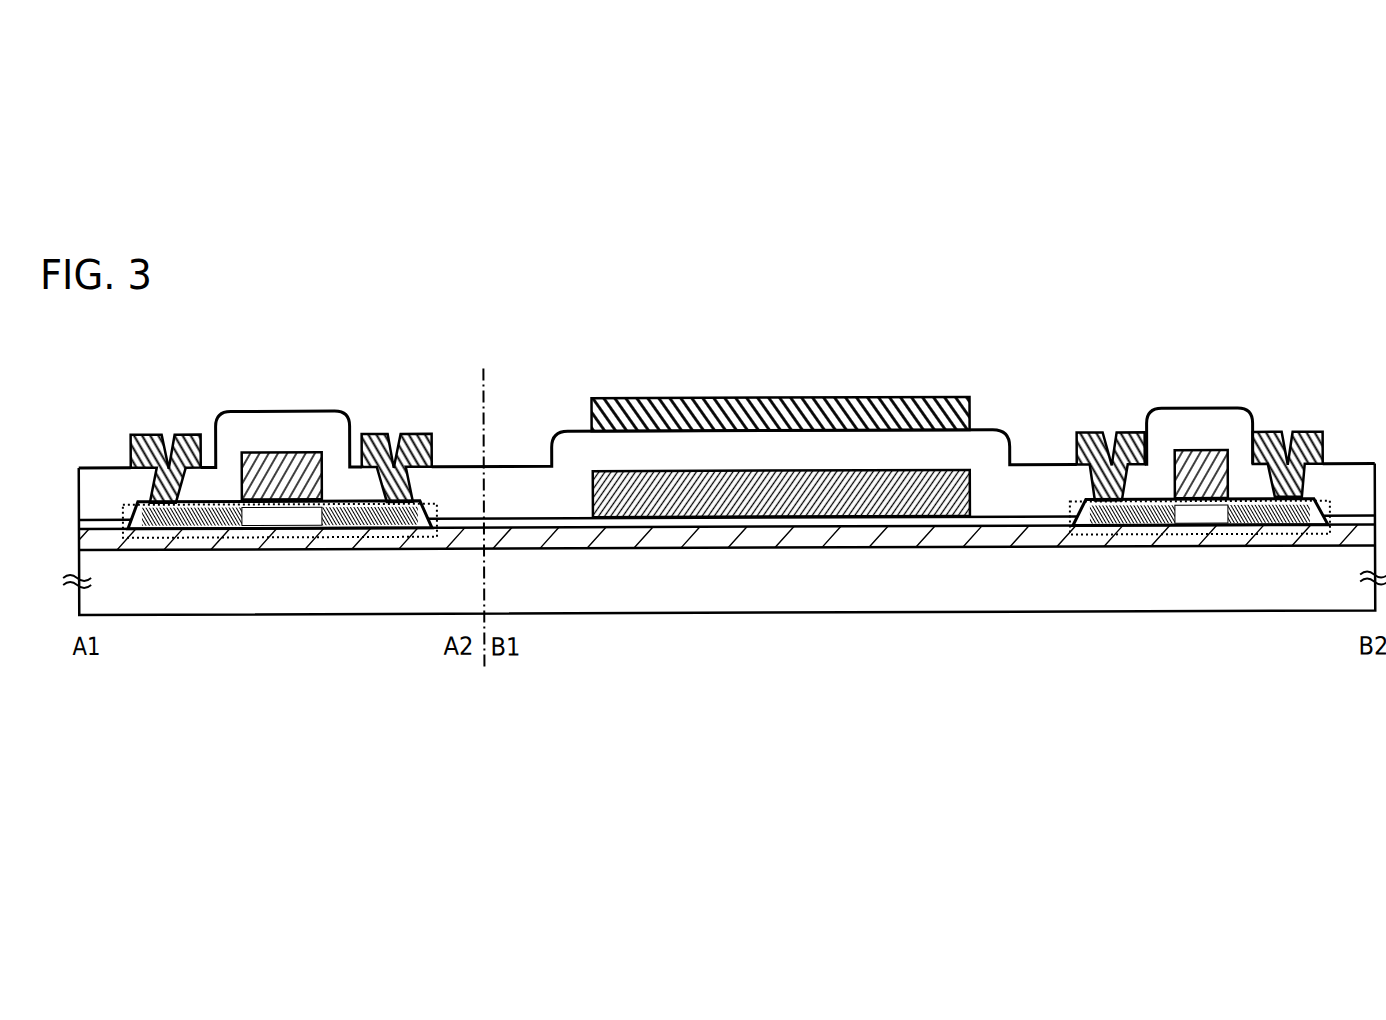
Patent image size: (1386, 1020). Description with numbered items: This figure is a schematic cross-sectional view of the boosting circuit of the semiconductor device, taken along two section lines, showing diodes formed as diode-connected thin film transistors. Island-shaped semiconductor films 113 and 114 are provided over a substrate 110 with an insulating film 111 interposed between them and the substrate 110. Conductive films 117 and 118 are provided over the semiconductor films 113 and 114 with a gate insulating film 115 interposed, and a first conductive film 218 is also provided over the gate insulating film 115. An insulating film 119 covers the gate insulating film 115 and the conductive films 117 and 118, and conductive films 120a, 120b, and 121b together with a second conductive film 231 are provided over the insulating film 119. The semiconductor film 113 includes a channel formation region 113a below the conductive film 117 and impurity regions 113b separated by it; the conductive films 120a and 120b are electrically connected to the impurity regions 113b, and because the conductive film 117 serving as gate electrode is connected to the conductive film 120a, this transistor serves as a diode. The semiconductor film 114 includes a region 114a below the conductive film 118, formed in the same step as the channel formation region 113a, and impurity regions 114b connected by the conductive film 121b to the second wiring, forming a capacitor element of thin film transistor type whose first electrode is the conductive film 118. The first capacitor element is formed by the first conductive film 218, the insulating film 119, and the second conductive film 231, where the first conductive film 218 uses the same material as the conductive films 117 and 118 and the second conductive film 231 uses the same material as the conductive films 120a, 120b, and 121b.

The substrate 110 is at (138, 603).
The insulating film 111 is at (623, 538).
The semiconductor film 113 is at (380, 540).
The channel formation region 113a is at (287, 520).
The impurity regions 113b is at (183, 533).
The semiconductor film 114 is at (1288, 540).
The region 114a is at (1197, 520).
The impurity regions 114b is at (1112, 540).
The gate insulating film 115 is at (988, 524).
The conductive film 117 is at (283, 455).
The conductive film 118 is at (1198, 458).
The insulating film 119 is at (515, 479).
The conductive film 120a is at (150, 432).
The conductive film 120b is at (415, 432).
The conductive film 121b is at (1093, 434).
The first conductive film 218 is at (752, 509).
The second conductive film 231 is at (802, 401).